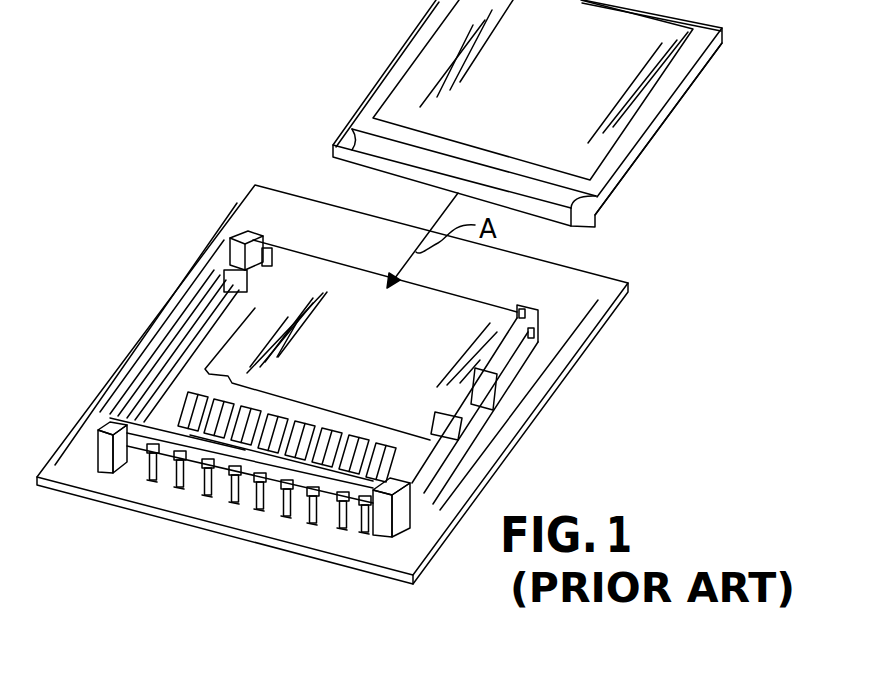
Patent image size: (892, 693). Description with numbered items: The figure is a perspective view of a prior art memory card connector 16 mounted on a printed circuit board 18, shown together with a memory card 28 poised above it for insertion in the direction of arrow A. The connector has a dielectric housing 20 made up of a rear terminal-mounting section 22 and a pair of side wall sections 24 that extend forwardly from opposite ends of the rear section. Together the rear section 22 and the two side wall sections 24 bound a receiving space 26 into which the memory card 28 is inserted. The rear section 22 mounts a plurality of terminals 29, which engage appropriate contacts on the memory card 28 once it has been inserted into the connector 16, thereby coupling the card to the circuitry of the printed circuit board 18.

The memory card connector 16 is at (349, 428).
The printed circuit board 18 is at (572, 300).
The dielectric housing 20 is at (250, 482).
The rear terminal-mounting section 22 is at (203, 482).
The side wall sections 24 is at (167, 357).
The receiving space 26 is at (340, 445).
The memory card 28 is at (602, 102).
The terminals 29 is at (313, 488).